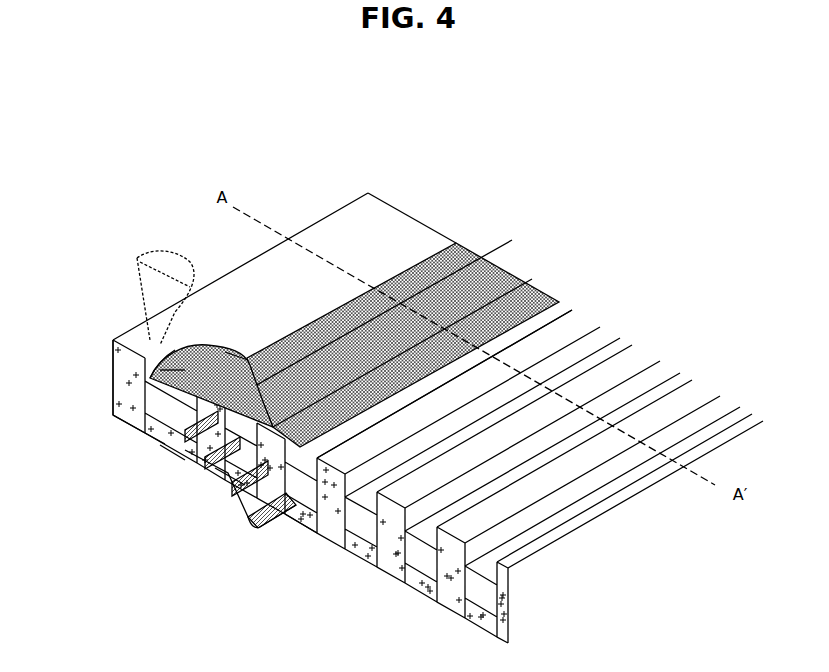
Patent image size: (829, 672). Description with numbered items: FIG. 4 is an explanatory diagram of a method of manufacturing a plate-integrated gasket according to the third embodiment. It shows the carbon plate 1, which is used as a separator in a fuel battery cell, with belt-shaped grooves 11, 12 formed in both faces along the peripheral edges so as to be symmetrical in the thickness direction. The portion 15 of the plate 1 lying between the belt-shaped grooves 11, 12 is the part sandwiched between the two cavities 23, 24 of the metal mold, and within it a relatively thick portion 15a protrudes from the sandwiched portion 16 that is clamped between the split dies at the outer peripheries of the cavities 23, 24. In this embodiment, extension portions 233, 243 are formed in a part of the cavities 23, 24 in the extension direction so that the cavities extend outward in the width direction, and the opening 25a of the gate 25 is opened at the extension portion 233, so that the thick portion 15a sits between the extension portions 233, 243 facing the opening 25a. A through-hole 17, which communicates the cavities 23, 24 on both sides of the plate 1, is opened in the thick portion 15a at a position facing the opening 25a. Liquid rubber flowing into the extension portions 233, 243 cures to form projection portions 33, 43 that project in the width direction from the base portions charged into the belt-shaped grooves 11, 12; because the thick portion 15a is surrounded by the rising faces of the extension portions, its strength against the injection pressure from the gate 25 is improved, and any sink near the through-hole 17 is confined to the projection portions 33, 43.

The plate 1 is at (333, 238).
The belt-shaped groove 11 is at (405, 275).
The belt-shaped groove 12 is at (302, 510).
The portion between the belt-shaped grooves 15 is at (222, 475).
The thick portion 15a is at (235, 350).
The sandwiched portion 16 is at (113, 365).
The through-hole 17 is at (125, 420).
The cavity 23 is at (477, 280).
The extension portion 233 is at (148, 375).
The cavity 24 is at (250, 532).
The extension portion 243 is at (150, 440).
The gate 25 is at (138, 296).
The opening of the gate 25a is at (172, 365).
The projection portion 33 is at (205, 350).
The projection portion 43 is at (162, 450).